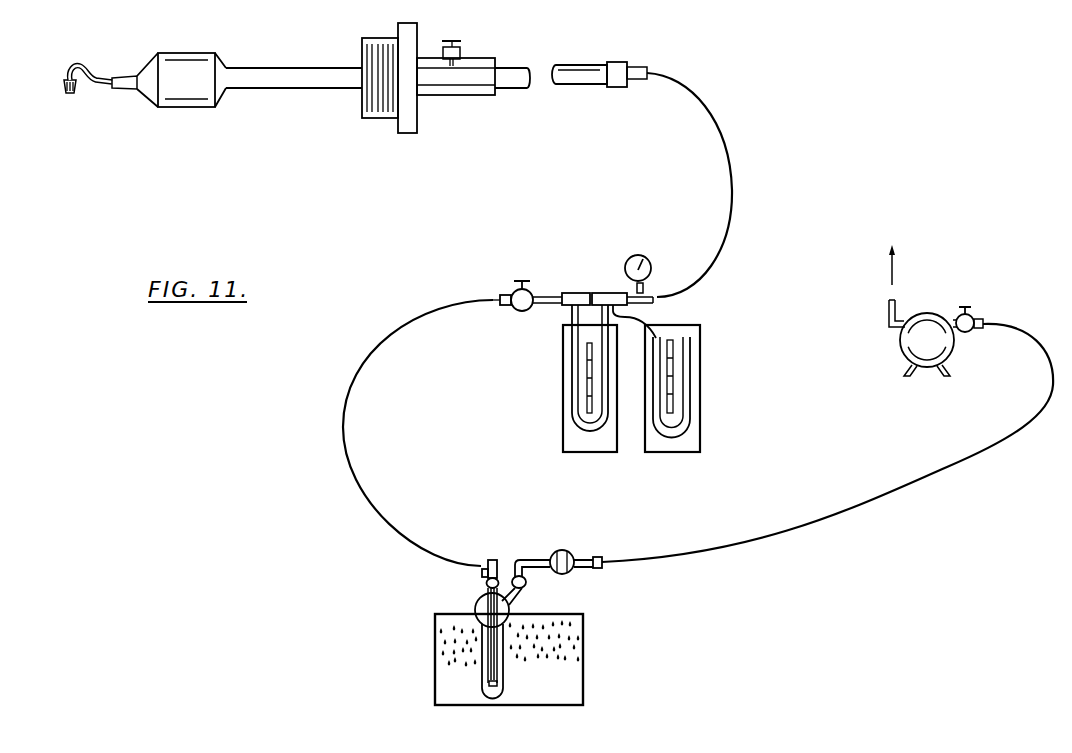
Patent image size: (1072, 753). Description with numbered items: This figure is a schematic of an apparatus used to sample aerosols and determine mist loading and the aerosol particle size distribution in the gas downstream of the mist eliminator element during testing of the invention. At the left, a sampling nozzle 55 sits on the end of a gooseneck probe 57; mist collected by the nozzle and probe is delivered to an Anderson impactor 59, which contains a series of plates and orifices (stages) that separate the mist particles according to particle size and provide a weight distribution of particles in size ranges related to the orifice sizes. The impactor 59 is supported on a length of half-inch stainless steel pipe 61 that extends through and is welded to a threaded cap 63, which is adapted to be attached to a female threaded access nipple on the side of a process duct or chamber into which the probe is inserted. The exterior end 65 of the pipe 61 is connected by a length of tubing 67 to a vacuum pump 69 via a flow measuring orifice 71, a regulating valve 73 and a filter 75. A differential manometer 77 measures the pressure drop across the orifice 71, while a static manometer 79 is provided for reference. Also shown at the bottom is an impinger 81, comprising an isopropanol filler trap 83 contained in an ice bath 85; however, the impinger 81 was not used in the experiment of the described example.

The sampling nozzle 55 is at (70, 94).
The gooseneck probe 57 is at (80, 66).
The Anderson impactor 59 is at (193, 108).
The stainless steel pipe 61 is at (277, 69).
The threaded cap 63 is at (405, 134).
The exterior end 65 is at (573, 85).
The tubing 67 is at (733, 188).
The vacuum pump 69 is at (928, 368).
The flow measuring orifice 71 is at (590, 292).
The regulating valve 73 is at (518, 312).
The filter 75 is at (563, 550).
The differential manometer 77 is at (565, 428).
The static manometer 79 is at (702, 427).
The impinger 81 is at (603, 646).
The isopropanol filler trap 83 is at (477, 656).
The ice bath 85 is at (560, 688).